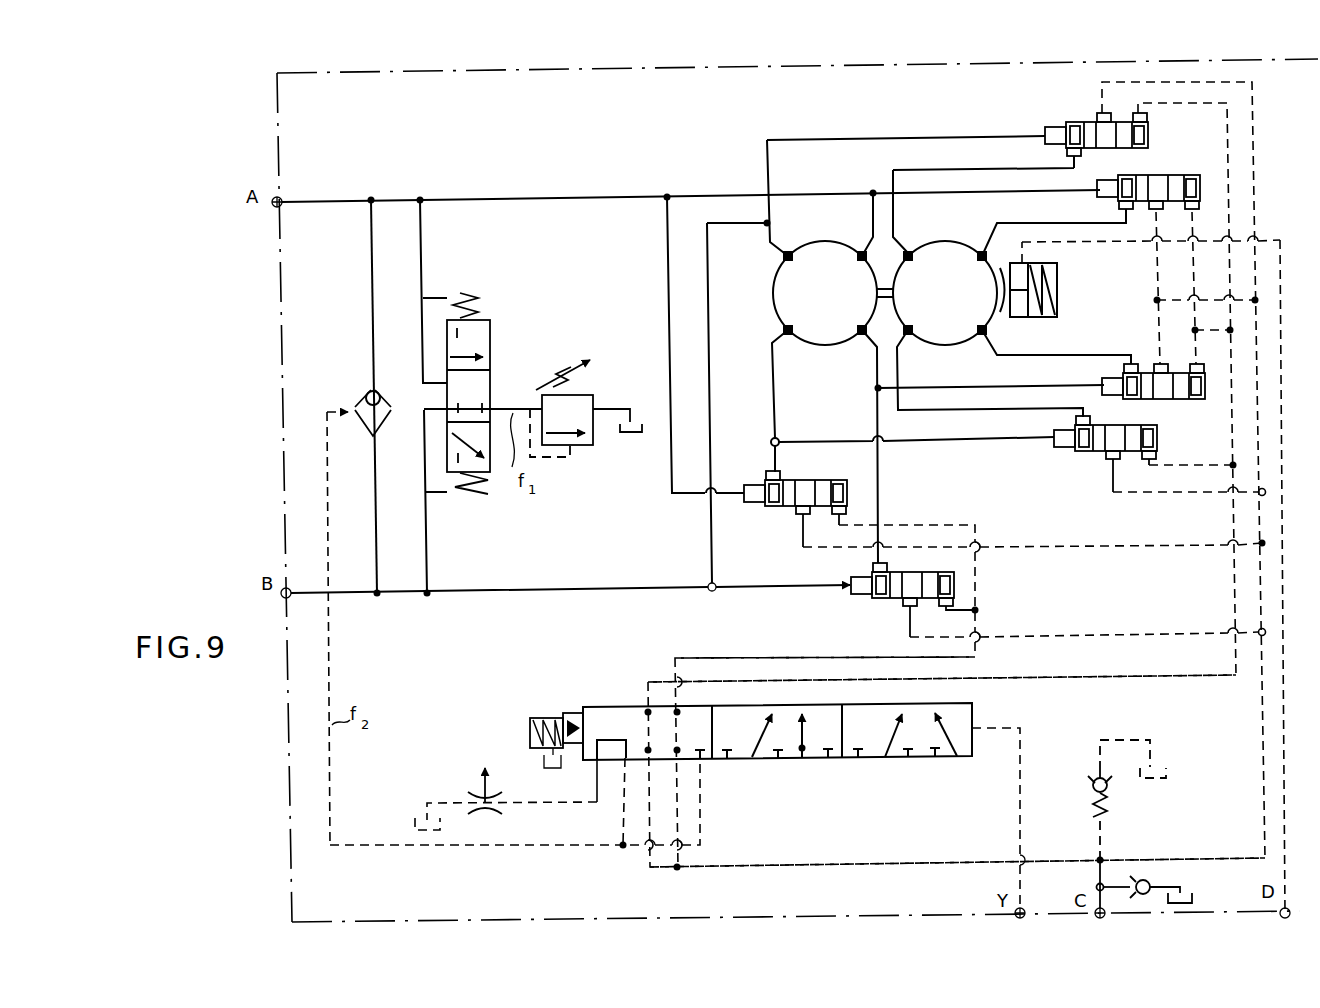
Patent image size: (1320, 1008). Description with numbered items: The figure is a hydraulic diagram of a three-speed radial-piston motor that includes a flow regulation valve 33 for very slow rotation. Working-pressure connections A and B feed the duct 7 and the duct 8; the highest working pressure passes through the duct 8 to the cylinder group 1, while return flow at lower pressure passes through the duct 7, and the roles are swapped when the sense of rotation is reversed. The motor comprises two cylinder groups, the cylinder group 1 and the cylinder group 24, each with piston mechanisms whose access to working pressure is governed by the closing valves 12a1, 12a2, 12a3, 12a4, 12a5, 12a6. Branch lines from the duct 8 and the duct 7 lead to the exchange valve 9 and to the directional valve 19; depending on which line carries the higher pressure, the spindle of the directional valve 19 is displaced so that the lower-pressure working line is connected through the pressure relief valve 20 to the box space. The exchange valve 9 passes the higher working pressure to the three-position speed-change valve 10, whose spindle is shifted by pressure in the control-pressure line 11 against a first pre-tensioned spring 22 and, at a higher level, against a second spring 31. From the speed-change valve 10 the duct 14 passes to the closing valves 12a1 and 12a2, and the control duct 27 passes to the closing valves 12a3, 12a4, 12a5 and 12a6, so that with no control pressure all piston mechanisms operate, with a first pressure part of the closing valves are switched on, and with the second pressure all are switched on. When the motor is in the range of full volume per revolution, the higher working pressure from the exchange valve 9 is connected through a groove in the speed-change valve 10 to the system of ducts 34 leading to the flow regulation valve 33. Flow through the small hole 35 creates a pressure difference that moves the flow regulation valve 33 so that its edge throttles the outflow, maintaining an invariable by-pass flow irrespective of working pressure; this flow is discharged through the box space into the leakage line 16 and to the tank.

The cylinder group 1 is at (759, 302).
The duct 7 is at (478, 200).
The duct 8 is at (505, 593).
The exchange valve 9 is at (355, 388).
The speed-change valve 10 is at (625, 705).
The control-pressure line 11 is at (1017, 806).
The closing valve 12a1 is at (962, 583).
The closing valve 12a2 is at (856, 489).
The closing valve 12a3 is at (1086, 454).
The closing valve 12a4 is at (1100, 372).
The closing valve 12a5 is at (1158, 167).
The closing valve 12a6 is at (1041, 123).
The duct 14 is at (705, 656).
The leakage line 16 is at (790, 867).
The directional valve 19 is at (493, 326).
The pressure relief valve 20 is at (587, 388).
The first pre-tensioned spring 22 is at (578, 708).
The cylinder group 24 is at (934, 235).
The control duct 27 is at (1013, 682).
The second spring 31 is at (563, 717).
The flow regulation valve 33 is at (476, 780).
The system of ducts 34 is at (568, 800).
The small hole 35 is at (498, 806).